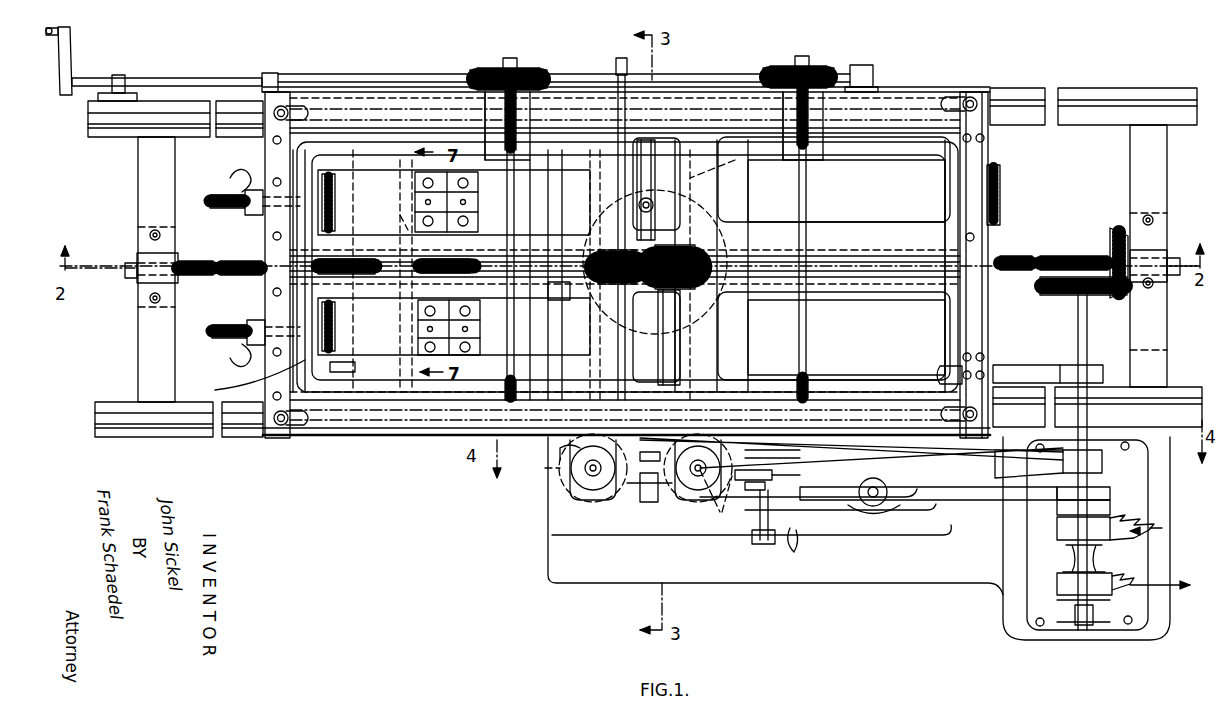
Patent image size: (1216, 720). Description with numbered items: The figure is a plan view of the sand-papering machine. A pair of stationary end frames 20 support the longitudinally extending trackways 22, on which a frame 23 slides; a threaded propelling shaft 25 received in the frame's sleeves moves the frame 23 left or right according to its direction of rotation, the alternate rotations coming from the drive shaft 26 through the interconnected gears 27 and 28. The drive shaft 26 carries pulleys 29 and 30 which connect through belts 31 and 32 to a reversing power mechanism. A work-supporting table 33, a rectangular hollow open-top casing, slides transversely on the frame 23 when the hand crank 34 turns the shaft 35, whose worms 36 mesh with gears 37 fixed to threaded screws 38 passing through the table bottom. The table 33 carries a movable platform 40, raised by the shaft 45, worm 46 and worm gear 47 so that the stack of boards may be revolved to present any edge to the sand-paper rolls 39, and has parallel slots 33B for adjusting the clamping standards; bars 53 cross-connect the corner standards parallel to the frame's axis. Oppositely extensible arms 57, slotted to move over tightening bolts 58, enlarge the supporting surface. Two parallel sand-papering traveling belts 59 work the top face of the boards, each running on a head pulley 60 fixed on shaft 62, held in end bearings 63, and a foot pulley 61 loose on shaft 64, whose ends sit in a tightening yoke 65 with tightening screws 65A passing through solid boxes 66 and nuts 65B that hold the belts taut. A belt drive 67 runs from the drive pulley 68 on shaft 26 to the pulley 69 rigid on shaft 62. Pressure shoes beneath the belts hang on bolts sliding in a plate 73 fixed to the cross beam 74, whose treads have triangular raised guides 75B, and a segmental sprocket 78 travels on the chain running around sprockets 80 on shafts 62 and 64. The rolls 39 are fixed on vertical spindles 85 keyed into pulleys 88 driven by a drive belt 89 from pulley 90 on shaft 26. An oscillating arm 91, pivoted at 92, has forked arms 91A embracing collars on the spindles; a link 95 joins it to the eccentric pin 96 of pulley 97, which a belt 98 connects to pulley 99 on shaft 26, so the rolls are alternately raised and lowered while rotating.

The end frame 20 is at (138, 318).
The trackway 22 is at (175, 102).
The frame 23 is at (950, 92).
The threaded propelling shaft 25 is at (218, 262).
The drive shaft 26 is at (1088, 328).
The gear 27 is at (1042, 293).
The gear 28 is at (1107, 245).
The pulley 29 is at (1057, 528).
The pulley 30 is at (1057, 585).
The belt 31 is at (1152, 502).
The belt 32 is at (1120, 558).
The work-supporting table 33 is at (490, 150).
The parallel slot 33B is at (838, 360).
The hand crank 34 is at (72, 47).
The shaft 35 is at (321, 76).
The worm 36 is at (483, 70).
The gear 37 is at (518, 60).
The threaded screw 38 is at (515, 105).
The sand-paper roll 39 is at (560, 476).
The movable platform 40 is at (722, 161).
The shaft 45 is at (643, 78).
The worm 46 is at (585, 294).
The worm gear 47 is at (671, 247).
The bar 53 is at (435, 425).
The extensible arm 57 is at (660, 160).
The tightening bolt 58 is at (682, 204).
The sand papering traveling belt 59 is at (880, 174).
The head pulley 60 is at (930, 180).
The foot pulley 61 is at (395, 165).
The shaft 62 is at (1000, 190).
The end bearing 63 is at (990, 150).
The shaft 64 is at (340, 375).
The tightening yoke 65 is at (247, 378).
The tightening screw 65A is at (222, 332).
The nut 65B is at (222, 362).
The solid box 66 is at (290, 166).
The belt drive 67 is at (1035, 367).
The drive pulley 68 is at (1062, 366).
The pulley 69 is at (940, 375).
The plate 73 is at (428, 176).
The cross beam 74 is at (463, 178).
The triangular raised guide 75B is at (392, 210).
The sprocket wheel 78 is at (464, 259).
The sprocket 80 is at (370, 260).
The vertical spindle 85 is at (593, 470).
The pulley 88 is at (565, 453).
The drive belt 89 is at (900, 444).
The pulley 90 is at (1102, 462).
The oscillating arm 91 is at (700, 470).
The forked arm 91A is at (537, 471).
The pivot 92 is at (648, 452).
The link 95 is at (772, 480).
The pin 96 is at (760, 500).
The pulley 97 is at (800, 542).
The belt 98 is at (974, 500).
The pulley 99 is at (1110, 493).